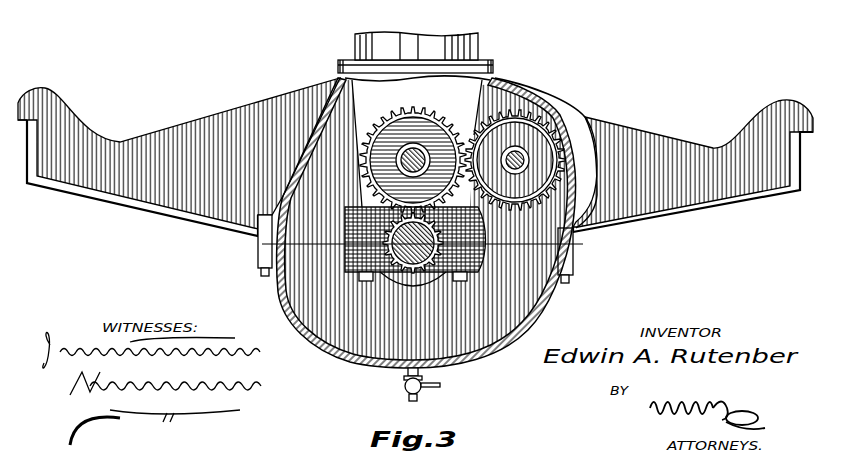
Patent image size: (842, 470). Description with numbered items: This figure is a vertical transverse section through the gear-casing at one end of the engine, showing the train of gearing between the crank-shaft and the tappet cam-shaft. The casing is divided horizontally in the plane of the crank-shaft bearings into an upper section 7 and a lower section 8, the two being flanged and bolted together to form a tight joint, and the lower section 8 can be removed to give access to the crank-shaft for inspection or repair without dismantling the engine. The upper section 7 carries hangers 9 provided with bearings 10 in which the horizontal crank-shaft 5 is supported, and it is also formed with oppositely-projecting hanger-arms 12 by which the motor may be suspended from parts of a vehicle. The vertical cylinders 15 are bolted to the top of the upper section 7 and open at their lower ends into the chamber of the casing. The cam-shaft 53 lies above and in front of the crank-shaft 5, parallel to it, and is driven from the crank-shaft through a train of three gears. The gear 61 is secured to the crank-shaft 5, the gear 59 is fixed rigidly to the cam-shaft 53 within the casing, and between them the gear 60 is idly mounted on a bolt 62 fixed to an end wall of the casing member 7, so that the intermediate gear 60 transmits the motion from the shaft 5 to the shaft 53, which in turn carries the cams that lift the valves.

The crank-shaft 5 is at (415, 272).
The upper section of the casing 7 is at (318, 118).
The lower section of the casing 8 is at (355, 343).
The hangers 9 is at (470, 93).
The bearings 10 is at (465, 245).
The hanger-arms 12 is at (156, 192).
The cylinders 15 is at (462, 33).
The cam-shaft 53 is at (540, 136).
The gear 59 is at (523, 155).
The gear 60 is at (418, 149).
The gear 61 is at (397, 268).
The bolt 62 is at (418, 155).